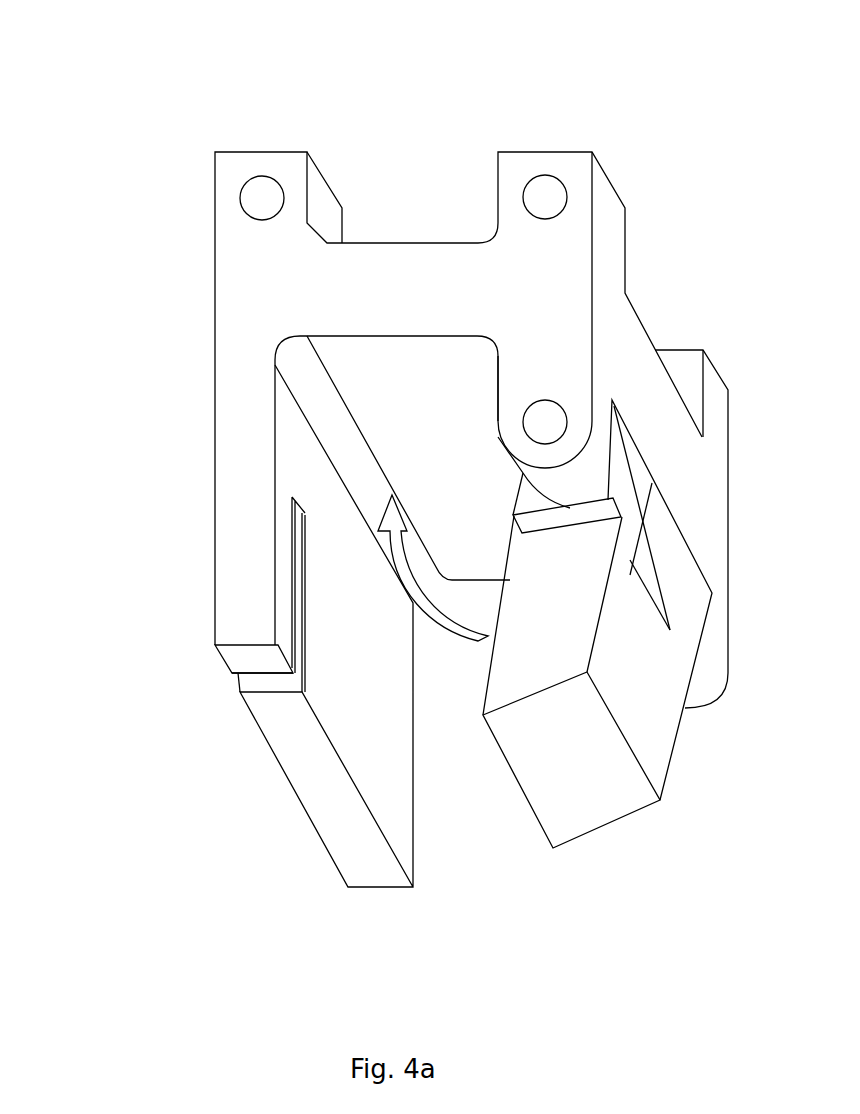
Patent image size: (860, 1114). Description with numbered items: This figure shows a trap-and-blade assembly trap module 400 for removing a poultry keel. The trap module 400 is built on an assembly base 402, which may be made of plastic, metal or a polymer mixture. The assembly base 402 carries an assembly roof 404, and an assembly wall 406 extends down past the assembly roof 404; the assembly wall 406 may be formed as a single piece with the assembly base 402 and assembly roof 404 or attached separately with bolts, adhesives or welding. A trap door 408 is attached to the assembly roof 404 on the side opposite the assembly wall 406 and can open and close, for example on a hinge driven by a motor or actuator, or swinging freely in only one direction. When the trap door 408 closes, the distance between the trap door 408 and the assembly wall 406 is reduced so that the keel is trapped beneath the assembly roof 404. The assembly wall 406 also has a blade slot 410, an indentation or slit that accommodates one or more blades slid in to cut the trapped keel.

The trap module 400 is at (137, 78).
The assembly base 402 is at (253, 290).
The assembly roof 404 is at (430, 357).
The assembly wall 406 is at (400, 800).
The trap door 408 is at (593, 793).
The blade slot 410 is at (297, 643).